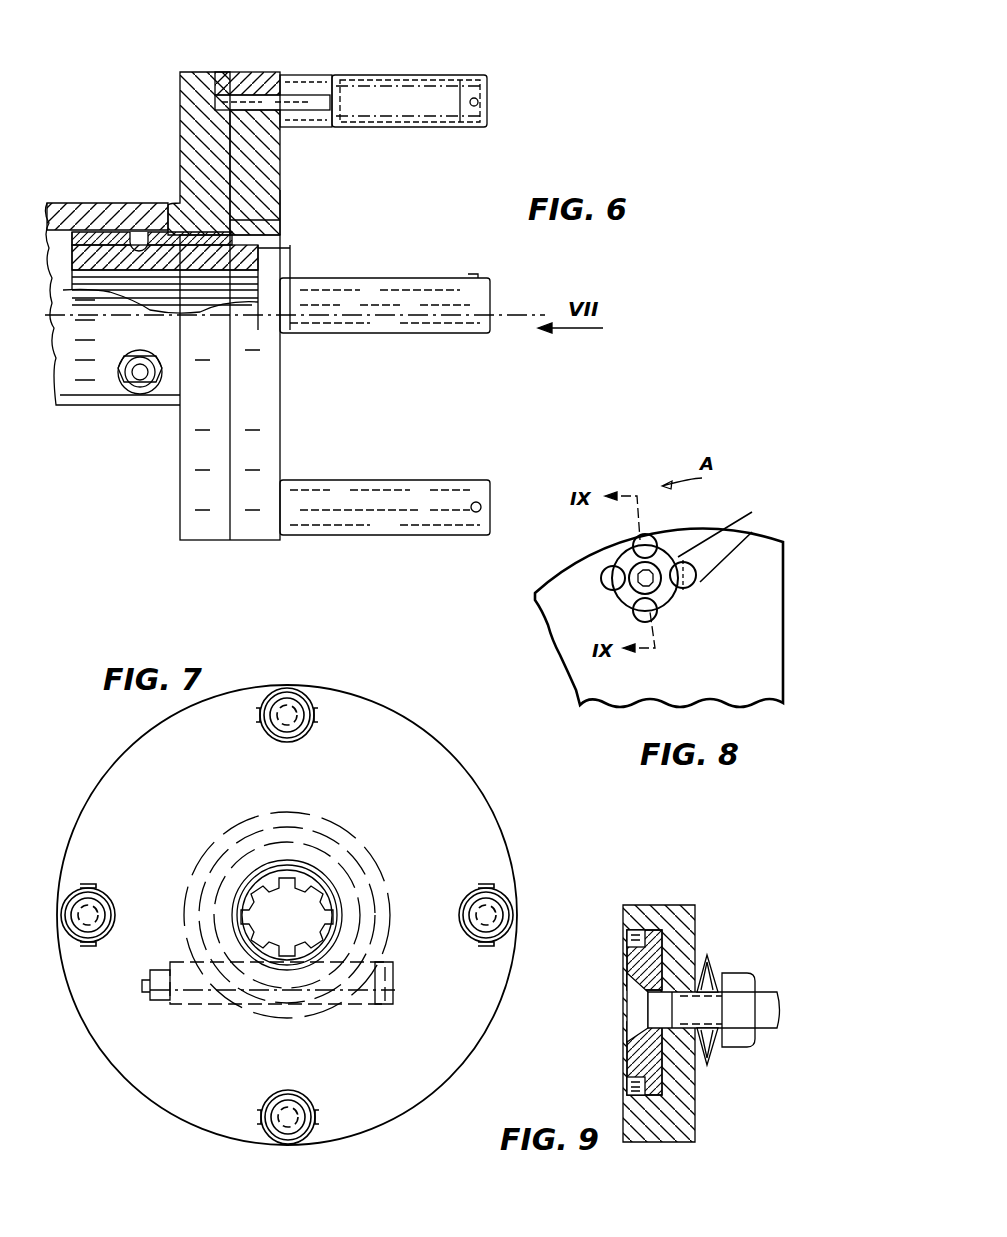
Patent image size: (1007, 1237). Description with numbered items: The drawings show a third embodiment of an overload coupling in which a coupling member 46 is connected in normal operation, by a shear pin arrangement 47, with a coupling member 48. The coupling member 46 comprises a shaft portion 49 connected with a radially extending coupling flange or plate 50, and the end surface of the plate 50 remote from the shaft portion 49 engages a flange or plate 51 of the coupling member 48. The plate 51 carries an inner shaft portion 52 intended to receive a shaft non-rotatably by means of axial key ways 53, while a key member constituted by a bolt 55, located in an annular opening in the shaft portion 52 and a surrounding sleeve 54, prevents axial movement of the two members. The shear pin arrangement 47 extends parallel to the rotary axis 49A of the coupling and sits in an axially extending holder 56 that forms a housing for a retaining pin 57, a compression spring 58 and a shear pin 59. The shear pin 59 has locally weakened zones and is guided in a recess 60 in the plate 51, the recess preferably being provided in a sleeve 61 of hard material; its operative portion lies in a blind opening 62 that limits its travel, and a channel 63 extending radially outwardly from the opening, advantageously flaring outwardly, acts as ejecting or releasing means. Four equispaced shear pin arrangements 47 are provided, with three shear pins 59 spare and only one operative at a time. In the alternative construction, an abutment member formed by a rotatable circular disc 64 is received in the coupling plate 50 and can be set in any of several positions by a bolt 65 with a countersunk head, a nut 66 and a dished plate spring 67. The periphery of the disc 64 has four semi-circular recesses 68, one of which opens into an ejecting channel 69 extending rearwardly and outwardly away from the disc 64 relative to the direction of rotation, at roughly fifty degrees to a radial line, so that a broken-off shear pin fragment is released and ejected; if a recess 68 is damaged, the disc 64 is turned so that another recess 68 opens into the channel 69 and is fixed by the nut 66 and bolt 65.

In FIG. 6, the coupling member 46 is at (178, 160).
In FIG. 8, the coupling member 46 is at (572, 672).
In FIG. 6, the shear pin arrangement 47 is at (360, 70).
In FIG. 7, the shear pin arrangement 47 is at (312, 730).
In FIG. 6, the coupling member 48 is at (284, 166).
In FIG. 7, the coupling member 48 is at (400, 705).
In FIG. 6, the shaft portion 49 is at (50, 203).
In FIG. 7, the shaft portion 49 is at (365, 850).
In FIG. 6, the rotary axis 49A is at (300, 290).
In FIG. 7, the rotary axis 49A is at (290, 915).
In FIG. 6, the coupling flange or plate 50 is at (185, 98).
In FIG. 8, the coupling flange or plate 50 is at (545, 587).
In FIG. 9, the coupling flange or plate 50 is at (702, 892).
In FIG. 6, the flange or plate 51 is at (275, 192).
In FIG. 7, the flange or plate 51 is at (490, 816).
In FIG. 6, the inner shaft portion 52 is at (245, 235).
In FIG. 7, the inner shaft portion 52 is at (262, 880).
In FIG. 6, the axial key ways 53 is at (215, 300).
In FIG. 7, the axial key ways 53 is at (320, 912).
In FIG. 6, the sleeve 54 is at (165, 208).
In FIG. 7, the sleeve 54 is at (360, 880).
In FIG. 6, the bolt 55 is at (140, 362).
In FIG. 7, the bolt 55 is at (395, 995).
In FIG. 6, the holder 56 is at (400, 76).
In FIG. 7, the holder 56 is at (312, 700).
In FIG. 6, the retaining pin 57 is at (478, 100).
In FIG. 7, the retaining pin 57 is at (258, 720).
In FIG. 6, the compression spring 58 is at (446, 75).
In FIG. 6, the shear pin 59 is at (300, 72).
In FIG. 7, the shear pin 59 is at (278, 742).
In FIG. 6, the recess 60 is at (240, 72).
In FIG. 6, the sleeve 61 is at (262, 72).
In FIG. 6, the blind opening 62 is at (222, 108).
In FIG. 6, the channel 63 is at (222, 72).
In FIG. 7, the channel 63 is at (282, 690).
In FIG. 8, the rotatable circular disc 64 is at (672, 600).
In FIG. 9, the rotatable circular disc 64 is at (640, 1052).
In FIG. 8, the bolt 65 is at (630, 602).
In FIG. 9, the bolt 65 is at (640, 1005).
In FIG. 9, the nut 66 is at (742, 975).
In FIG. 9, the dished plate spring 67 is at (712, 985).
In FIG. 8, the semi-circular recesses 68 is at (612, 585).
In FIG. 9, the semi-circular recesses 68 is at (626, 936).
In FIG. 8, the ejecting channel 69 is at (740, 525).